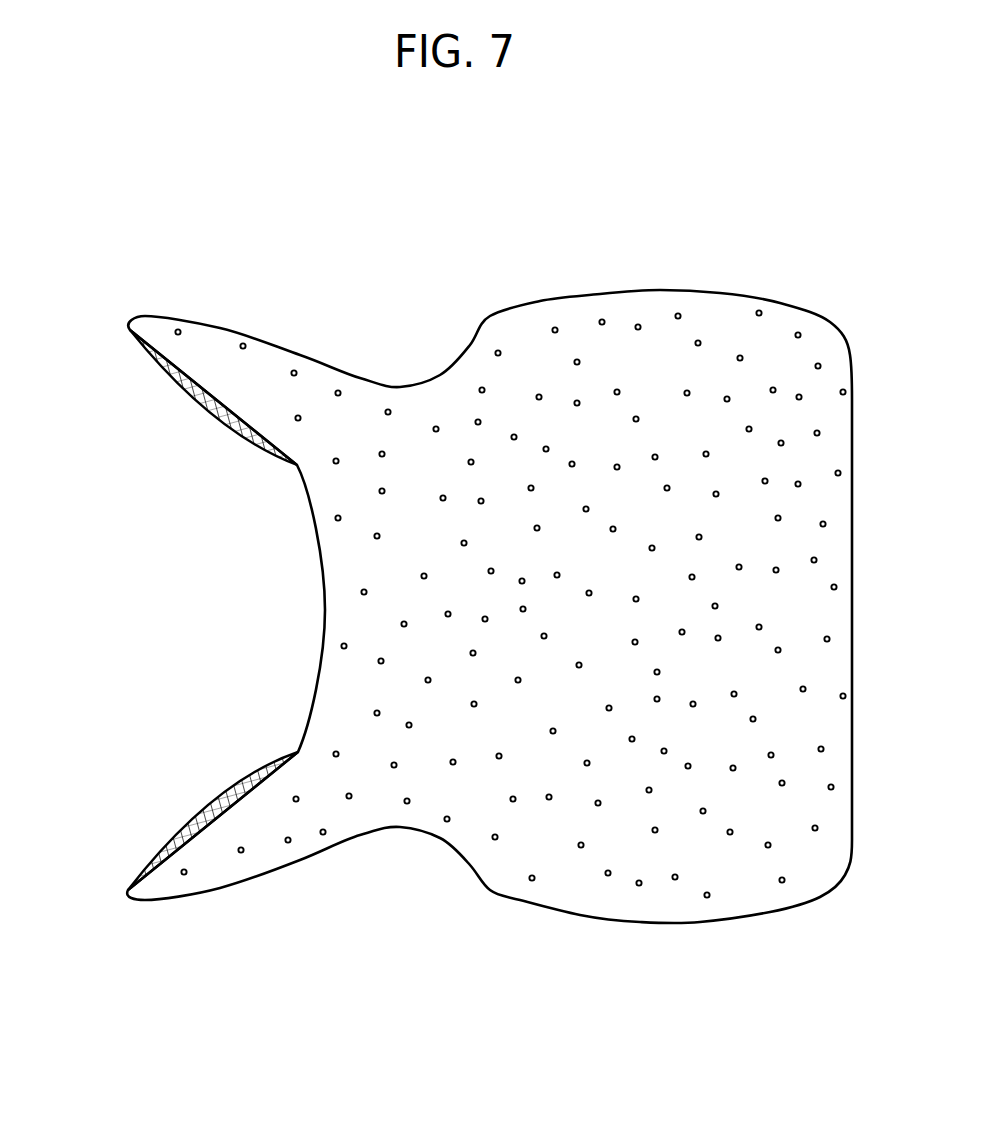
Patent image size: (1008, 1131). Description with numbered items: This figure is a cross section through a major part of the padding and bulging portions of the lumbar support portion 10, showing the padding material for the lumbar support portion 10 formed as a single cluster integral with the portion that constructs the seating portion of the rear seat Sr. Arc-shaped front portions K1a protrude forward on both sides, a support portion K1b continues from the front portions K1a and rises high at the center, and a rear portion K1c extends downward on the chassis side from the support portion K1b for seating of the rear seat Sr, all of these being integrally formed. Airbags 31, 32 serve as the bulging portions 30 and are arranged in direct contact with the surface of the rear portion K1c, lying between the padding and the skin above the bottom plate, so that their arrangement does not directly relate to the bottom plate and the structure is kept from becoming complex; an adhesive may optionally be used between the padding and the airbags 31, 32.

The lumbar support portion 10 is at (456, 616).
The rear seat Sr is at (778, 265).
The bulging portions 30 is at (179, 610).
The airbag 31 is at (217, 822).
The airbag 32 is at (194, 380).
The front portions K1a is at (218, 344).
The support portion K1b is at (388, 575).
The rear portion K1c is at (628, 366).